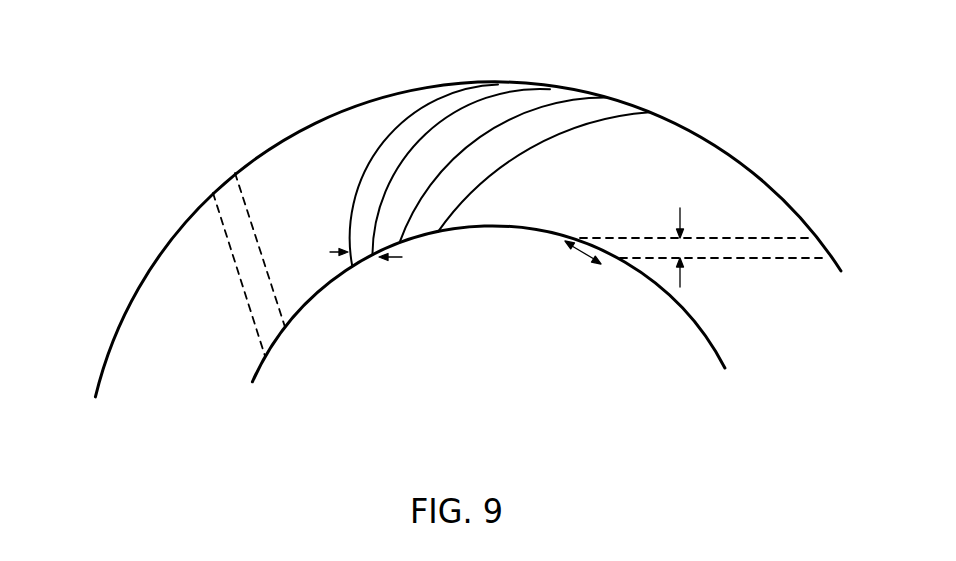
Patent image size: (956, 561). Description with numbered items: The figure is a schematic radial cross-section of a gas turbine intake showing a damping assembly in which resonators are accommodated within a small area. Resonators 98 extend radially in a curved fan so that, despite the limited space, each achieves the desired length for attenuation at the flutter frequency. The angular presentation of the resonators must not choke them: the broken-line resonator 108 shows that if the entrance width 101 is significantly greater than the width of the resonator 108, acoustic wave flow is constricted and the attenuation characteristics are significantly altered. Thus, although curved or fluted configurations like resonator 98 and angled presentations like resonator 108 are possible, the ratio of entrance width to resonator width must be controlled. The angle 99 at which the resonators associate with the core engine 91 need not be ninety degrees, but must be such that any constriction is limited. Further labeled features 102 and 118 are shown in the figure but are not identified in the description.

The core engine 91 is at (347, 434).
The resonators 98 is at (538, 103).
The angle 99 is at (365, 255).
The entrance width 101 is at (580, 262).
The depth offset 102 is at (682, 248).
The resonator 108 is at (733, 238).
The recess region 118 is at (253, 272).